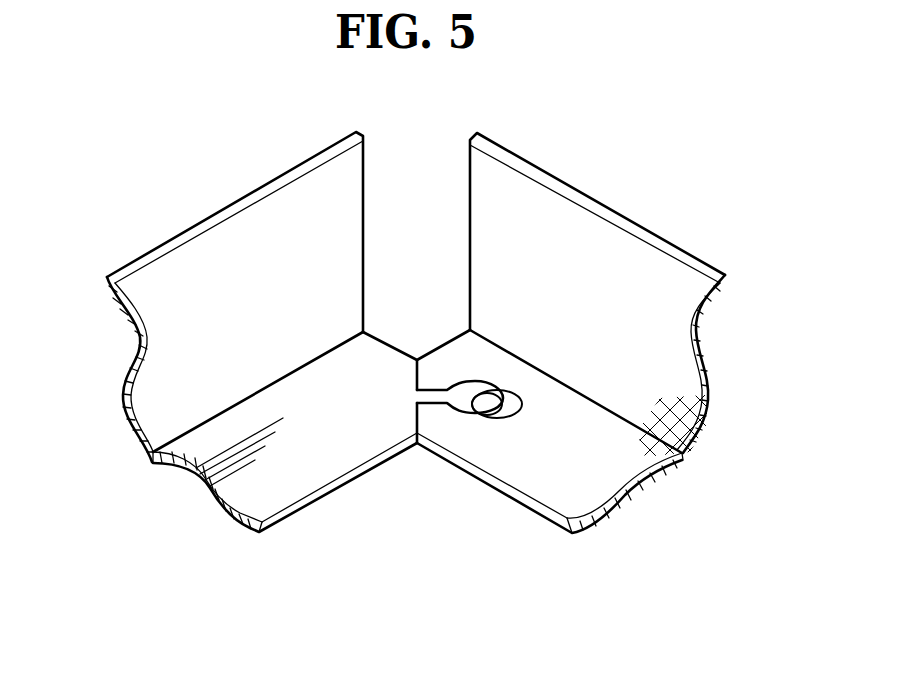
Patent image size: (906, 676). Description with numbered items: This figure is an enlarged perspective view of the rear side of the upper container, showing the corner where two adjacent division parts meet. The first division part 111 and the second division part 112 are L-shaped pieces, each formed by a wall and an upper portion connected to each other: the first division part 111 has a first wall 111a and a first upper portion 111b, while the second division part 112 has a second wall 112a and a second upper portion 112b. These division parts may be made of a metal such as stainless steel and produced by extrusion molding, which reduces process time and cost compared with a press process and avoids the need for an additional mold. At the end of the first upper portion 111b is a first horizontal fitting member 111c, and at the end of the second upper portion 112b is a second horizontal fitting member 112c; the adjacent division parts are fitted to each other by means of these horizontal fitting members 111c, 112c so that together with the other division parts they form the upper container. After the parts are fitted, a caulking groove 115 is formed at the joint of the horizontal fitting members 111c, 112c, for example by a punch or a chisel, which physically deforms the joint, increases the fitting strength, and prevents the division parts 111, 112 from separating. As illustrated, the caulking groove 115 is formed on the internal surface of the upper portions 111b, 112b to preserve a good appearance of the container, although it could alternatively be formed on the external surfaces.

The first division part 111 is at (290, 331).
The first wall 111a is at (267, 220).
The first upper portion 111b is at (237, 492).
The first horizontal fitting member 111c is at (458, 397).
The second division part 112 is at (588, 312).
The second wall 112a is at (640, 267).
The second upper portion 112b is at (593, 488).
The second horizontal fitting member 112c is at (472, 384).
The caulking groove 115 is at (508, 412).